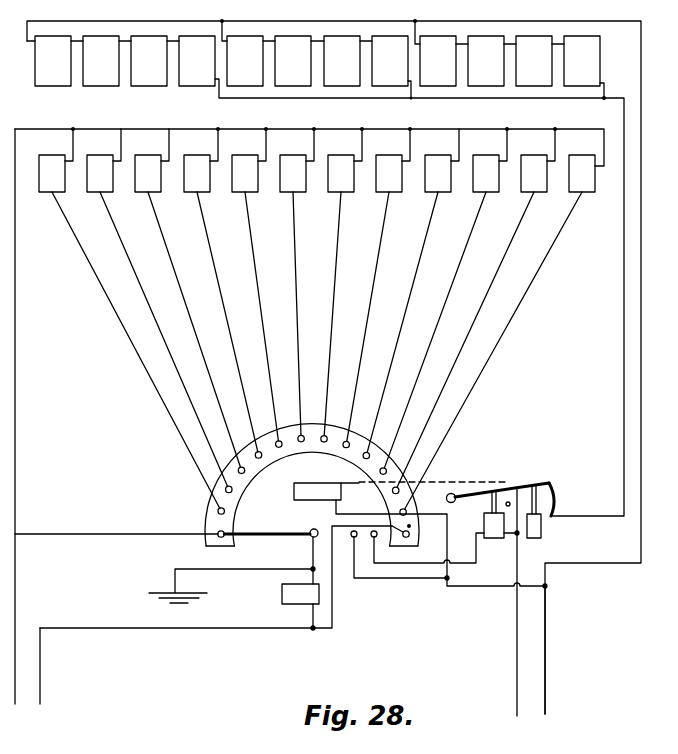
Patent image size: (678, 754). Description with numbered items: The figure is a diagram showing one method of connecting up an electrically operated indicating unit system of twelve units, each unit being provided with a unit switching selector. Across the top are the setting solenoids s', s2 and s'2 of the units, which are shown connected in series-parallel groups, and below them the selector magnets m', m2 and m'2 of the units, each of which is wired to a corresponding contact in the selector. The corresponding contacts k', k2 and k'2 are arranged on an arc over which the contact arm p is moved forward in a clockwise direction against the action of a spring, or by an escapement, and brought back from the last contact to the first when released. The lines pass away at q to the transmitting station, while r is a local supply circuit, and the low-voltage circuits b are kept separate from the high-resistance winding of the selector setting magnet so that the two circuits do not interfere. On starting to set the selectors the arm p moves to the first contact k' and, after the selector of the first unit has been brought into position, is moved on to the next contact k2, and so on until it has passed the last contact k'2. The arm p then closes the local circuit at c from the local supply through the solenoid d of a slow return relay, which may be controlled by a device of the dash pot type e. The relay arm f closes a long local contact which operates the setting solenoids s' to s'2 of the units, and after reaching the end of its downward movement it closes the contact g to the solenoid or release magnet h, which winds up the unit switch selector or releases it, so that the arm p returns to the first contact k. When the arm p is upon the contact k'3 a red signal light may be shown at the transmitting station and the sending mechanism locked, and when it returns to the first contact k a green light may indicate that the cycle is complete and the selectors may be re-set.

The setting solenoid s' is at (53, 74).
The setting solenoid s2 is at (105, 73).
The setting solenoid s'2 is at (579, 78).
The selector magnet m' is at (50, 177).
The selector magnet m2 is at (98, 178).
The selector magnet m'2 is at (586, 193).
The first contact k is at (202, 520).
The contact k' is at (244, 513).
The contact k2 is at (234, 489).
The contact k'2 is at (379, 500).
The contact k'3 is at (408, 570).
The release magnet h is at (313, 482).
The line wire a is at (152, 529).
The contact arm p is at (262, 536).
The relay coil l is at (283, 596).
The circuits b is at (333, 615).
The local circuit contact c is at (417, 555).
The solenoid of slow return relay d is at (485, 521).
The dash pot device e is at (542, 531).
The contact g is at (512, 492).
The arm f is at (551, 482).
The lines to transmitting station q is at (26, 681).
The local supply circuit r is at (531, 614).